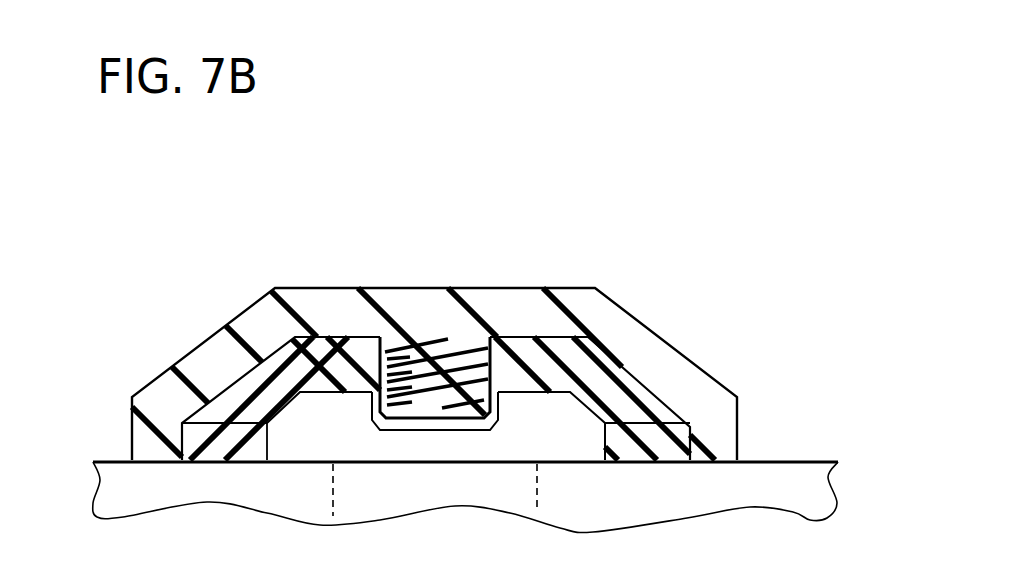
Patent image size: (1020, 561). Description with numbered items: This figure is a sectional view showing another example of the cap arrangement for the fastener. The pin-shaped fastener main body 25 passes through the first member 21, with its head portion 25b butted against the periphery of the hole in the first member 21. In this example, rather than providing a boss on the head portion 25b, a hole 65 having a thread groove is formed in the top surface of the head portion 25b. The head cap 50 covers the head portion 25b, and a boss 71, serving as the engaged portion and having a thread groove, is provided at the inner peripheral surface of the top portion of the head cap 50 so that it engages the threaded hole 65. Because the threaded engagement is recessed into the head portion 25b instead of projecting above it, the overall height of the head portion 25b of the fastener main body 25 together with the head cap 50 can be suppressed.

The first member 21 is at (782, 460).
The fastener main body 25 is at (592, 390).
The head portion 25b is at (273, 407).
The head cap 50 is at (360, 290).
The hole 65 is at (486, 400).
The boss 71 is at (330, 338).